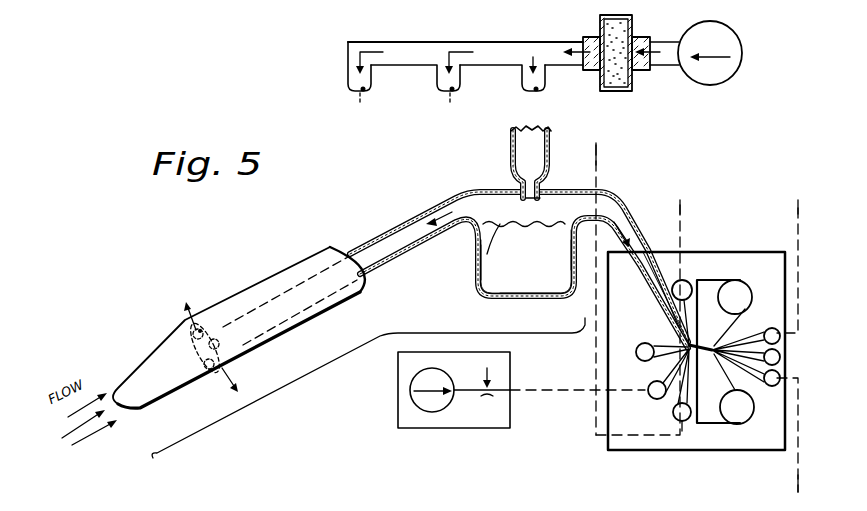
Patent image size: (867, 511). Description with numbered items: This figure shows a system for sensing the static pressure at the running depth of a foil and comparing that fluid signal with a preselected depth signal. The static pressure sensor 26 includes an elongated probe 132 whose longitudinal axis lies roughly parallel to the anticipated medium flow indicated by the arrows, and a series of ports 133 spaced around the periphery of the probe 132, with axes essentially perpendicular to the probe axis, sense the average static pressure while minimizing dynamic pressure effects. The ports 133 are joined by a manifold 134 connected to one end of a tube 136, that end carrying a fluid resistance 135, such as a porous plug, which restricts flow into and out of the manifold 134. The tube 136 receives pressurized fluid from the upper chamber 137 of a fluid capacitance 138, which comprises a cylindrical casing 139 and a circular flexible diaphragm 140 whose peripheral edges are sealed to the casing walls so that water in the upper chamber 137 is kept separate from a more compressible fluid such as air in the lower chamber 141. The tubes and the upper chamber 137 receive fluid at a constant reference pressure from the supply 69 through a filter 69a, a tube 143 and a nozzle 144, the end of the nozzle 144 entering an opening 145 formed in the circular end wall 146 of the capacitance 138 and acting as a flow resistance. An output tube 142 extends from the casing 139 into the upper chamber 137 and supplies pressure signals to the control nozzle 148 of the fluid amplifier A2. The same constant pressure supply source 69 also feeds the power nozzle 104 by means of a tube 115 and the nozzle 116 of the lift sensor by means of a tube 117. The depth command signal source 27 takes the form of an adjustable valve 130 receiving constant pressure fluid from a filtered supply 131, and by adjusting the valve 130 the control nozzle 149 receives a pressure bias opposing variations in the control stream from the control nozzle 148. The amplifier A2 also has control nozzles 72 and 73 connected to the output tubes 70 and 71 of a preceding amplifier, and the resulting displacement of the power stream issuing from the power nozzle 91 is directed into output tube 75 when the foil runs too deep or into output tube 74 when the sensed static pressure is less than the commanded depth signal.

The tube 117 is at (345, 86).
The tube 115 is at (437, 86).
The tube 143 is at (522, 86).
The nozzle 116 is at (350, 115).
The power nozzle 104 is at (444, 110).
The filter 69a is at (601, 92).
The constant pressure supply source 69 is at (737, 83).
The upper chamber 137 is at (476, 206).
The tube 136 is at (370, 265).
The circular end wall 146 is at (507, 192).
The nozzle 144 is at (535, 181).
The opening 145 is at (538, 198).
The cylindrical casing 139 is at (527, 292).
The flexible diaphragm 140 is at (476, 259).
The output tube 142 is at (572, 228).
The lower chamber 141 is at (540, 270).
The fluid capacitance 138 is at (468, 292).
The elongated probe 132 is at (275, 275).
The ports 133 is at (197, 327).
The manifold 134 is at (222, 330).
The fluid resistance 135 is at (228, 344).
The static pressure sensor 26 is at (267, 400).
The depth command signal source 27 is at (487, 432).
The filtered supply 131 is at (427, 413).
The adjustable valve 130 is at (498, 398).
The output tube 71 is at (598, 153).
The output tube 70 is at (682, 210).
The output tube 74 is at (795, 207).
The output tube 75 is at (795, 484).
The fluid amplifier A2 is at (674, 455).
The control nozzle 72 is at (688, 305).
The control nozzle 148 is at (655, 306).
The power nozzle 91 is at (650, 340).
The control nozzle 149 is at (661, 374).
The control nozzle 73 is at (672, 403).